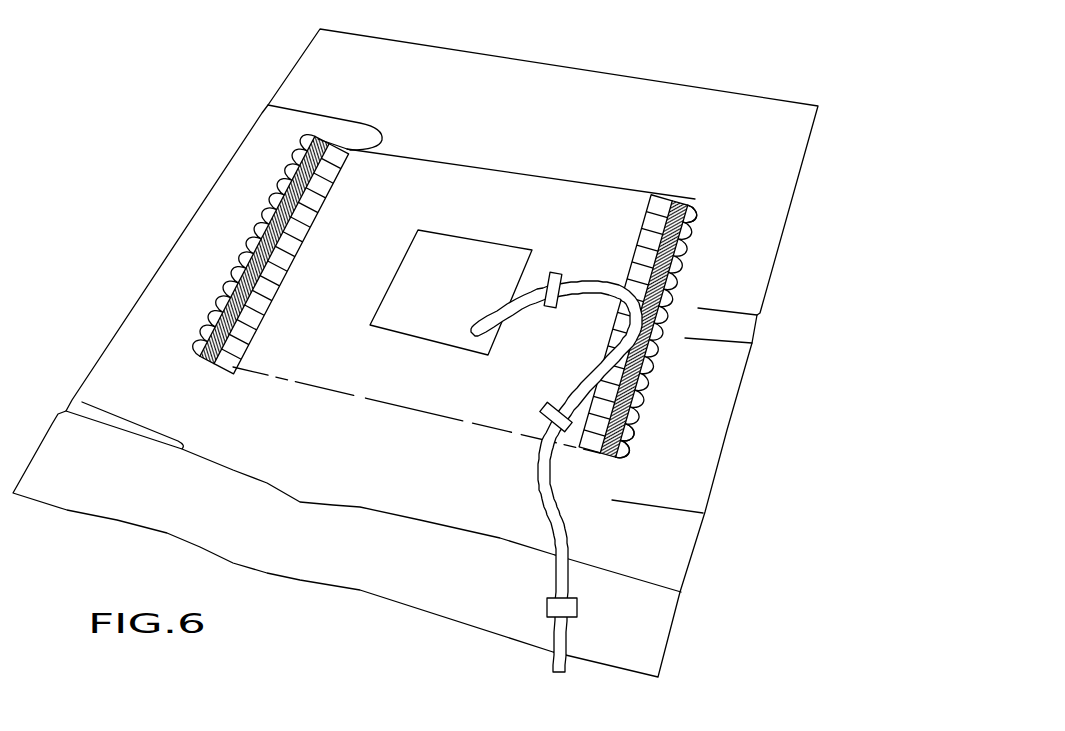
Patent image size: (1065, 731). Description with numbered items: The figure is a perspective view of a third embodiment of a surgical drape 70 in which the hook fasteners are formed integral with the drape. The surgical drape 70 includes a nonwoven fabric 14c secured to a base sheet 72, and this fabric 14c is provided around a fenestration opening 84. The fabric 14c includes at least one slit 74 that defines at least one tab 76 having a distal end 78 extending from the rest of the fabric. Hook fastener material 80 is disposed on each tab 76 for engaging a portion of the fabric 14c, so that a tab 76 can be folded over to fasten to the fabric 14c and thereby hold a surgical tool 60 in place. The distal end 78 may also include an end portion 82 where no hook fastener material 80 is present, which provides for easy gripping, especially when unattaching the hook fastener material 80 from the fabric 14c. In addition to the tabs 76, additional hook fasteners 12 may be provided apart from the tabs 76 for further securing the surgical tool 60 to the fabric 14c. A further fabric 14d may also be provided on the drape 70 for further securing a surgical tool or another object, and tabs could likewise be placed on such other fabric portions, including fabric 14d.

The surgical drape 70 is at (641, 60).
The base sheet 72 is at (678, 99).
The nonwoven fabric 14c is at (580, 203).
The fabric 14d is at (653, 638).
The hook fastener material 80 is at (685, 200).
The end portion 82 is at (702, 208).
The distal end 78 is at (652, 442).
The tab 76 is at (624, 469).
The slit 74 is at (583, 445).
The fenestration opening 84 is at (475, 299).
The surgical tool 60 is at (570, 553).
The hook fastener 12 is at (550, 310).